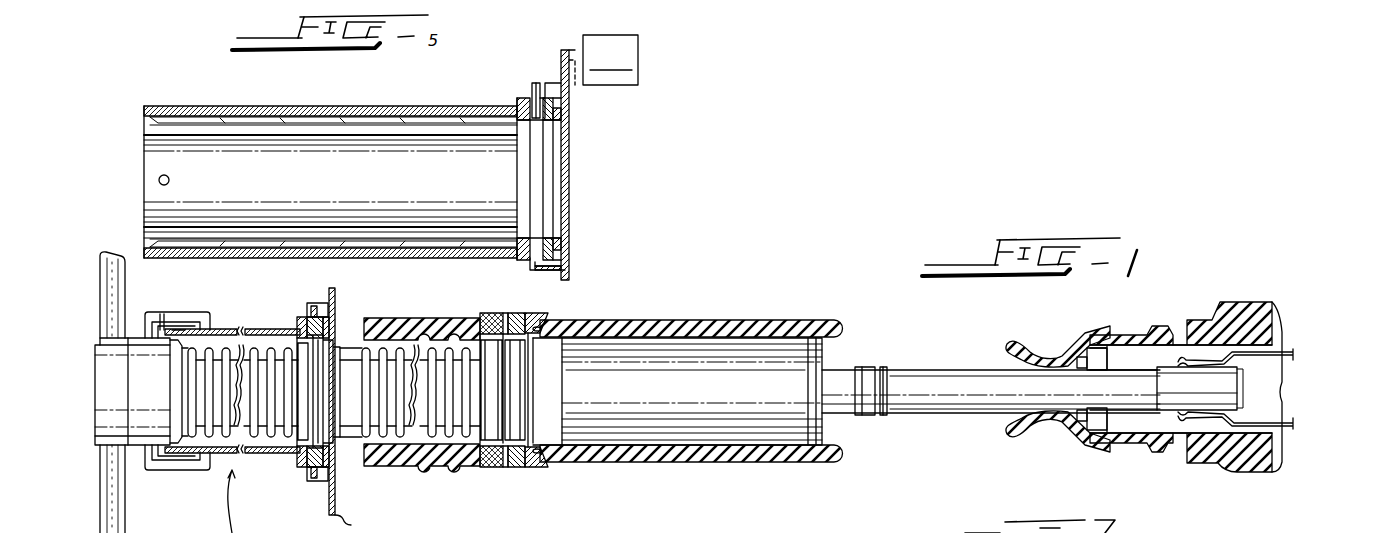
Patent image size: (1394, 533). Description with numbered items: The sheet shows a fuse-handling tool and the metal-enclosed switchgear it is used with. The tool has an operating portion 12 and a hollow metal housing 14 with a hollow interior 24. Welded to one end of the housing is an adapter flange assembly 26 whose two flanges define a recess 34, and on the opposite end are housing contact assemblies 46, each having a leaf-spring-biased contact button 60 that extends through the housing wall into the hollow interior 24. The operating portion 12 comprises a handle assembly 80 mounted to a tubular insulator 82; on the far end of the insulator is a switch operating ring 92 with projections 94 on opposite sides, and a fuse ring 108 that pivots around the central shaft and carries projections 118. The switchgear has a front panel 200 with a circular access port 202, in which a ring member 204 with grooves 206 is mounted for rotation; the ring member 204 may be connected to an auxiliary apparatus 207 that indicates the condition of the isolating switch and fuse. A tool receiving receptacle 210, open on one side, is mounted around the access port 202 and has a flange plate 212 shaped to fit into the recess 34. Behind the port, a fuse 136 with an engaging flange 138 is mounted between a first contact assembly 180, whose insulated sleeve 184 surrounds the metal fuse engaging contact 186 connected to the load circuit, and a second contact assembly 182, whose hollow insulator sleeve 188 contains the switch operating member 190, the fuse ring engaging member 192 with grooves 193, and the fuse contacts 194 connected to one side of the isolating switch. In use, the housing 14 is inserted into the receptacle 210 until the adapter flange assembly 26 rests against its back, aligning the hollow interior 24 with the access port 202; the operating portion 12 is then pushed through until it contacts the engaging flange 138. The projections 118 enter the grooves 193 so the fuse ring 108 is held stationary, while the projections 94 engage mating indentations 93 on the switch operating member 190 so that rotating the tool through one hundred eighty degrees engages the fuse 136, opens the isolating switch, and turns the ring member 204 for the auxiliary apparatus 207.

In FIG. 1, the operating portion 12 is at (136, 450).
In FIG. 5, the hollow metal housing 14 is at (240, 106).
In FIG. 1, the hollow metal housing 14 is at (278, 456).
In FIG. 5, the hollow interior 24 is at (205, 190).
In FIG. 5, the adapter flange assembly 26 is at (517, 100).
In FIG. 5, the recess 34 is at (546, 98).
In FIG. 1, the housing contact assemblies 46 is at (213, 299).
In FIG. 5, the contact button 60 is at (164, 175).
In FIG. 1, the contact button 60 is at (163, 314).
In FIG. 1, the handle assembly 80 is at (95, 398).
In FIG. 1, the tubular insulator 82 is at (262, 352).
In FIG. 1, the switch operating ring 92 is at (480, 468).
In FIG. 1, the mating indentations 93 is at (518, 468).
In FIG. 1, the projections 94 is at (492, 446).
In FIG. 1, the fuse ring 108 is at (550, 390).
In FIG. 1, the projections 118 is at (506, 313).
In FIG. 1, the fuse 136 is at (928, 370).
In FIG. 1, the engaging flange 138 is at (548, 420).
In FIG. 1, the first contact assembly 180 is at (1163, 309).
In FIG. 1, the second contact assembly 182 is at (642, 309).
In FIG. 1, the insulated sleeve 184 is at (1056, 345).
In FIG. 1, the fuse engaging contact 186 is at (1300, 386).
In FIG. 1, the hollow insulator sleeve 188 is at (378, 466).
In FIG. 1, the switch operating member 190 is at (500, 313).
In FIG. 1, the fuse ring engaging member 192 is at (522, 468).
In FIG. 1, the grooves 193 is at (530, 460).
In FIG. 1, the fuse contacts 194 is at (540, 315).
In FIG. 5, the front panel 200 is at (569, 278).
In FIG. 1, the front panel 200 is at (356, 410).
In FIG. 5, the access port 202 is at (575, 186).
In FIG. 5, the ring member 204 is at (575, 108).
In FIG. 5, the grooves 206 is at (570, 128).
In FIG. 5, the auxiliary apparatus 207 is at (610, 60).
In FIG. 5, the tool receiving receptacle 210 is at (555, 60).
In FIG. 5, the flange plate 212 is at (532, 88).